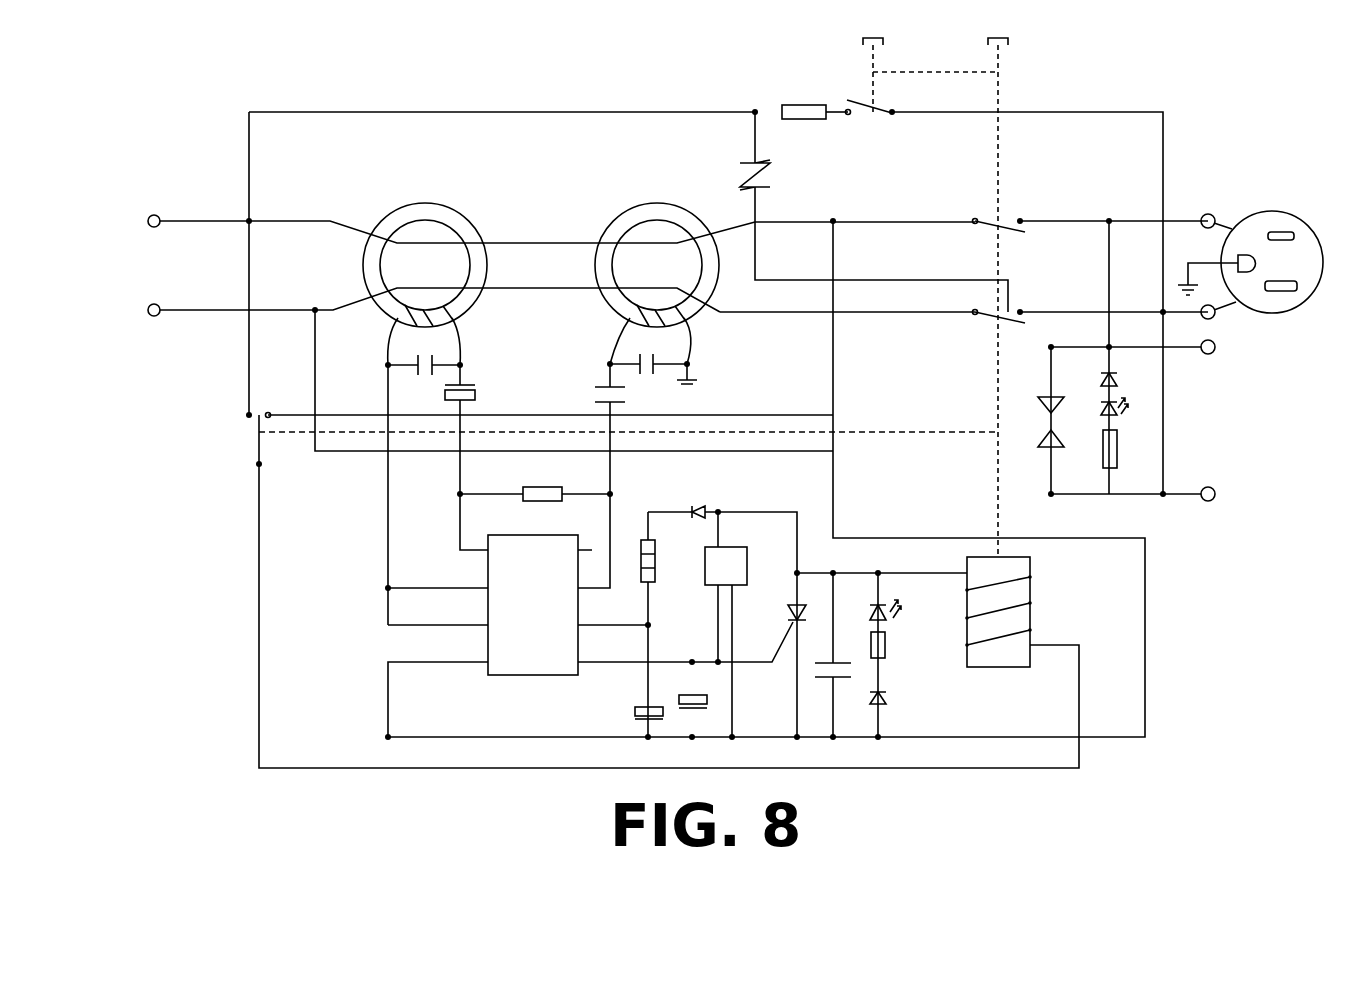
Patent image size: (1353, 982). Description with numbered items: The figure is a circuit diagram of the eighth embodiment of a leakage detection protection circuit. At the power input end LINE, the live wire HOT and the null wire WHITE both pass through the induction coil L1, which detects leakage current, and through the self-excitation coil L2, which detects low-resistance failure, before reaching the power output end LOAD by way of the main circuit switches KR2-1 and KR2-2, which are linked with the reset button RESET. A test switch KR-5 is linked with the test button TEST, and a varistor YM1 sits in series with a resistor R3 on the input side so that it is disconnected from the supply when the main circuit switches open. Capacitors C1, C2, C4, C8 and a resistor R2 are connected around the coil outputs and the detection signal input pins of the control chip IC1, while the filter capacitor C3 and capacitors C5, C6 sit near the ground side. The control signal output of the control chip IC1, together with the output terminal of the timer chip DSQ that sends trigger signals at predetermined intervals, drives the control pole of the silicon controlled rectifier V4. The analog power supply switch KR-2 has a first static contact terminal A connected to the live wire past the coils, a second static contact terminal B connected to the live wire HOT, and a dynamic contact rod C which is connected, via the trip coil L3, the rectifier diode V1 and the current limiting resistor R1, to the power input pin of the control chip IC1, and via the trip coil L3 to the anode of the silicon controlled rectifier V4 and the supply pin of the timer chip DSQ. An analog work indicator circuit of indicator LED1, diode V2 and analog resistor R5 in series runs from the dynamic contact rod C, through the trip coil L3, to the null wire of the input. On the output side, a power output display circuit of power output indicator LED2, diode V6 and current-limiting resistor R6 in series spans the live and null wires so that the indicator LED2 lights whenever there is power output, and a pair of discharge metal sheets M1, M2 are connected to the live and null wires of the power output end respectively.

The live wire HOT is at (451, 217).
The null wire WHITE is at (429, 317).
The power input end LINE is at (102, 269).
The power output end LOAD is at (1250, 356).
The induction coil L1 is at (425, 274).
The self-excitation coil L2 is at (657, 274).
The solenoid coil L3 is at (998, 624).
The capacitor C1 is at (424, 356).
The capacitor C2 is at (653, 361).
The filter capacitor C3 is at (634, 714).
The capacitor C4 is at (472, 389).
The capacitor C5 is at (695, 709).
The capacitor C6 is at (828, 657).
The capacitor C8 is at (620, 395).
The current limiting resistor R1 is at (662, 561).
The resistor R2 is at (535, 486).
The resistor R3 is at (814, 103).
The analog resistor R5 is at (868, 645).
The current-limiting resistor R6 is at (1119, 449).
The rectifier diode V1 is at (698, 503).
The diode V2 is at (867, 698).
The SCR V4 is at (777, 615).
The diode V6 is at (1116, 378).
The indicator LED1 is at (870, 603).
The power output indicator LED2 is at (1126, 417).
The control chip IC1 is at (533, 605).
The timer chip DSQ is at (726, 563).
The metal oxide varistor MOV YM1 is at (770, 166).
The test switch KR-5 is at (877, 102).
The main circuit switch KR2-1 is at (973, 217).
The main circuit switch KR2-2 is at (973, 308).
The analog power supply switch KR-2 is at (286, 445).
The test button TEST is at (924, 66).
The reset button RESET is at (996, 289).
The first static contact terminal A is at (275, 406).
The second static contact terminal B is at (235, 415).
The dynamic contact rod C is at (244, 465).
The discharge metal sheet M1 is at (1042, 406).
The discharge metal sheet M2 is at (1042, 440).